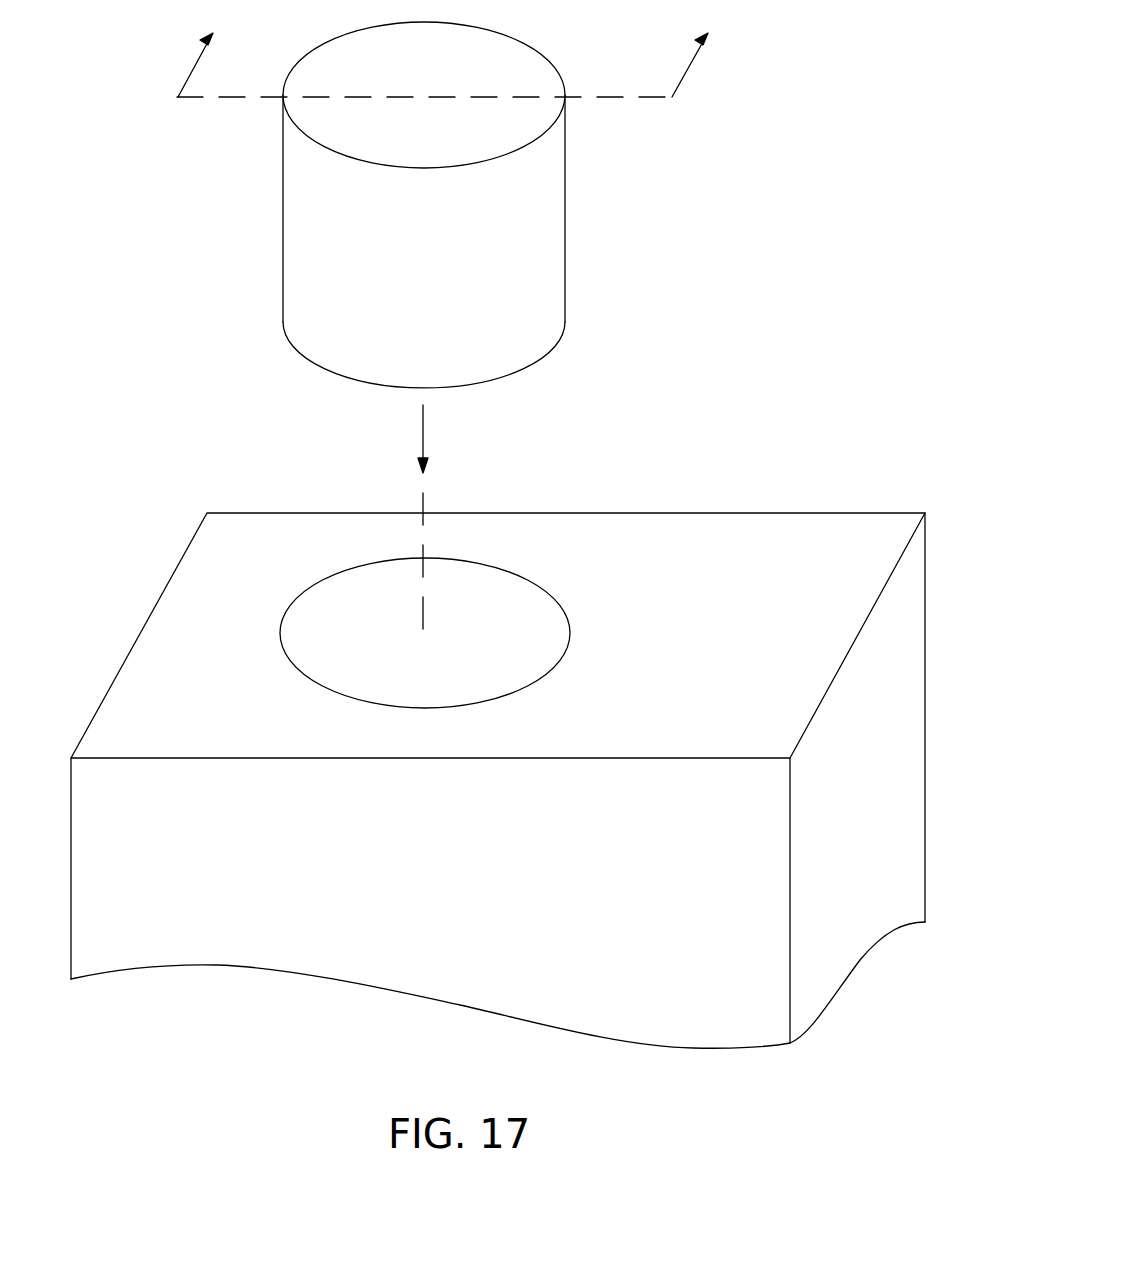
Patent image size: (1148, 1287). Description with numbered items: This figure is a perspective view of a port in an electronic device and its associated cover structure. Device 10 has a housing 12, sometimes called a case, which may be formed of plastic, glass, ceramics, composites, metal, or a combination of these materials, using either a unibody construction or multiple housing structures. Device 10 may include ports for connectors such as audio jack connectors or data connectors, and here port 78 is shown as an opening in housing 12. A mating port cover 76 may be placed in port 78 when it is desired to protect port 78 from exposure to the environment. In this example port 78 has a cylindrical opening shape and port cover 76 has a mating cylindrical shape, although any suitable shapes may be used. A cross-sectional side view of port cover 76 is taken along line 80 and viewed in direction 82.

The device 10 is at (727, 440).
The housing 12 is at (603, 532).
The port cover 76 is at (566, 238).
The port 78 is at (359, 598).
The line 80 is at (233, 99).
The direction 82 is at (193, 69).